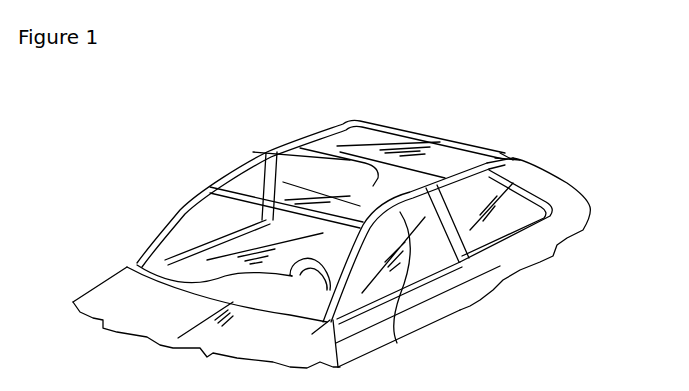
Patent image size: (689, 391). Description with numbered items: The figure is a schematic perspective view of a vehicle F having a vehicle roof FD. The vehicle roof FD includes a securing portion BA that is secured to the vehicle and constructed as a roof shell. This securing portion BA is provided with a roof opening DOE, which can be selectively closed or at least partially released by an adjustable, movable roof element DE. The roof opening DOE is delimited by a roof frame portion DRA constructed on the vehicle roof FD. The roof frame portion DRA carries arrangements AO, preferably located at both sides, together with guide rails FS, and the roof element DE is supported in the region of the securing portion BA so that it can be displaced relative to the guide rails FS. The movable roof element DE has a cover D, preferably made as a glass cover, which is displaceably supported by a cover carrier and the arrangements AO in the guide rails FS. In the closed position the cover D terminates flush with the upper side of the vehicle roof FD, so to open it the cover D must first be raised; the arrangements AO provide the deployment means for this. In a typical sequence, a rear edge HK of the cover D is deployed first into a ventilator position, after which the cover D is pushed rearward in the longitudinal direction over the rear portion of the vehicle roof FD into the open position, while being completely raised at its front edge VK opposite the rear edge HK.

The vehicle F is at (582, 71).
The roof element DE is at (268, 128).
The vehicle roof FD is at (311, 130).
The cover D is at (383, 141).
The rear edge HK is at (454, 135).
The securing portion BA is at (520, 159).
The arrangements AO is at (253, 152).
The guide rails FS is at (299, 172).
The roof opening DOE is at (210, 187).
The front edge VK is at (403, 170).
The roof frame portion DRA is at (482, 300).